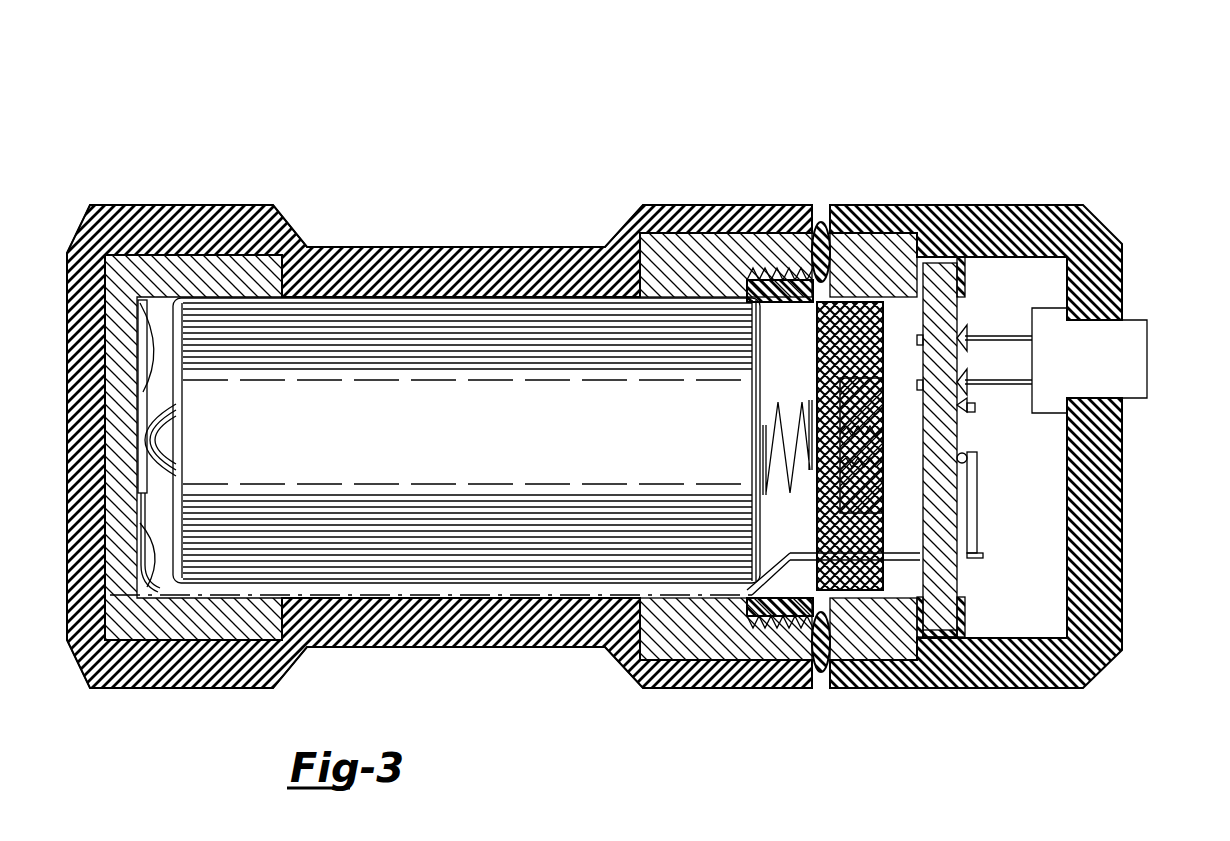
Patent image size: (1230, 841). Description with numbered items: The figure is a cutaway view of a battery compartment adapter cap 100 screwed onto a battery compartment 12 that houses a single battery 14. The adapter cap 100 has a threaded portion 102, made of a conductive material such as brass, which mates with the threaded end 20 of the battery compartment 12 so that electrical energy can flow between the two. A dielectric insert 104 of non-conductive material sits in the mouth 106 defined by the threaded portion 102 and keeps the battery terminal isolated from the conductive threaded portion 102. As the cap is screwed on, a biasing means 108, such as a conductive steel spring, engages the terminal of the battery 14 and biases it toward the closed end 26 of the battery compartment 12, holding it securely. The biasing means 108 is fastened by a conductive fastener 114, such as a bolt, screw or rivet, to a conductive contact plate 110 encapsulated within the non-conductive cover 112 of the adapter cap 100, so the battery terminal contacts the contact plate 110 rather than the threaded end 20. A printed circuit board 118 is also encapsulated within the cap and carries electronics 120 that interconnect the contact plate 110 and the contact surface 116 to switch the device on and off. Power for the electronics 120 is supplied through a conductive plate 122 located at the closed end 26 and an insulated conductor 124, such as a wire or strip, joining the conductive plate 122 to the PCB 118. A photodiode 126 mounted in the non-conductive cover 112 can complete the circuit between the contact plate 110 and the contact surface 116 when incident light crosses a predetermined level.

The battery compartment 12 is at (500, 262).
The battery 14 is at (398, 338).
The threaded end 20 is at (698, 250).
The closed end 26 is at (157, 567).
The battery compartment adapter cap 100 is at (1008, 170).
The threaded portion 102 is at (775, 262).
The dielectric insert 104 is at (800, 538).
The mouth 106 is at (787, 603).
The biasing means 108 is at (770, 458).
The contact plate 110 is at (882, 497).
The non-conductive cover 112 is at (1063, 205).
The fastener 114 is at (850, 357).
The contact surface 116 is at (897, 240).
The printed circuit board 118 is at (952, 635).
The electronics 120 is at (977, 527).
The conductive plate 122 is at (155, 310).
The insulated conductor 124 is at (425, 597).
The photodiode 126 is at (1133, 343).